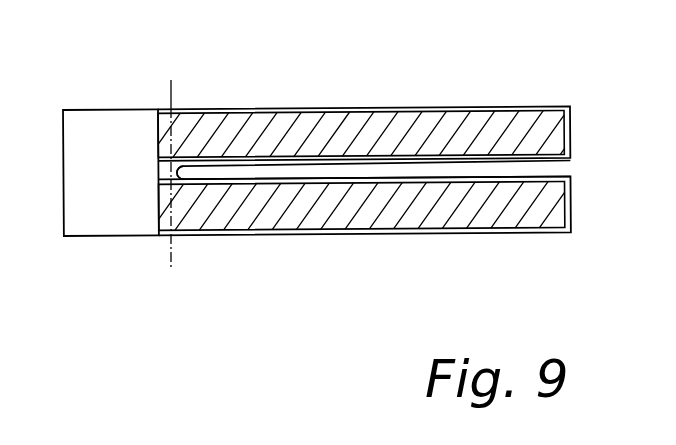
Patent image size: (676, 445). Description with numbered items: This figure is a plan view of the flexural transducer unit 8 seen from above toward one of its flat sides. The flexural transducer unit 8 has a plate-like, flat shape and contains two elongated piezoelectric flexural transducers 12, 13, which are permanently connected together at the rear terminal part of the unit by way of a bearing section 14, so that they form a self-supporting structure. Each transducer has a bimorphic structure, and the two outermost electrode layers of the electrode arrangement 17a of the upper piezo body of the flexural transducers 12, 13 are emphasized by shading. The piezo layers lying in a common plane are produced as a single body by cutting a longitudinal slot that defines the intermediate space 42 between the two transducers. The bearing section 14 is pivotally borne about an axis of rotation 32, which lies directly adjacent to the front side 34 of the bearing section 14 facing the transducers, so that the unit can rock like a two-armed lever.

The flexural transducer unit 8 is at (338, 93).
The first piezoelectric flexural transducer 12 is at (440, 123).
The second piezoelectric flexural transducer 13 is at (445, 205).
The bearing section 14 is at (107, 210).
The electrode arrangement 17a is at (275, 190).
The axis of rotation 32 is at (168, 83).
The front side of the bearing section 34 is at (180, 175).
The intermediate space 42 is at (342, 168).